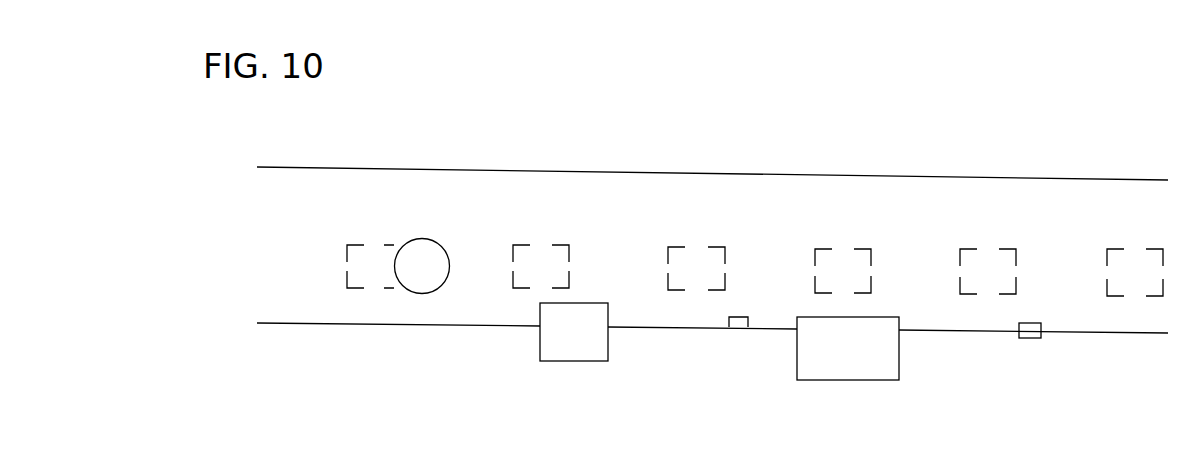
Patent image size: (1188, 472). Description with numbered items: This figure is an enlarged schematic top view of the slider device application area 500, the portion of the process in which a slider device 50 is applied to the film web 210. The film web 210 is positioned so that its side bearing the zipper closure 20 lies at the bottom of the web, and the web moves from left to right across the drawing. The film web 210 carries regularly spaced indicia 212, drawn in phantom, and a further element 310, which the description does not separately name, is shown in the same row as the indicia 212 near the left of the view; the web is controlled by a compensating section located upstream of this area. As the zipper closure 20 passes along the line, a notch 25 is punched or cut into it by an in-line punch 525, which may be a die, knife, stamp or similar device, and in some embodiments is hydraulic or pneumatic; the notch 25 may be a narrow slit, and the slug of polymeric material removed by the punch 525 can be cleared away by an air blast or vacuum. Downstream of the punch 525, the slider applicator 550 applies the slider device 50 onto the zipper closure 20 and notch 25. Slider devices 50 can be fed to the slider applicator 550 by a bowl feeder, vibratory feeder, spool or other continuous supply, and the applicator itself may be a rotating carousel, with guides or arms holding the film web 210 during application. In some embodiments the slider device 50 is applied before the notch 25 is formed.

The slider device application area 500 is at (788, 135).
The film web 210 is at (421, 170).
The zipper closure 20 is at (465, 327).
The indicia 212 is at (363, 283).
The carrier 310 is at (430, 240).
The punch 525 is at (540, 360).
The notch 25 is at (742, 325).
The slider applicator 550 is at (797, 378).
The slider device 50 is at (1020, 337).